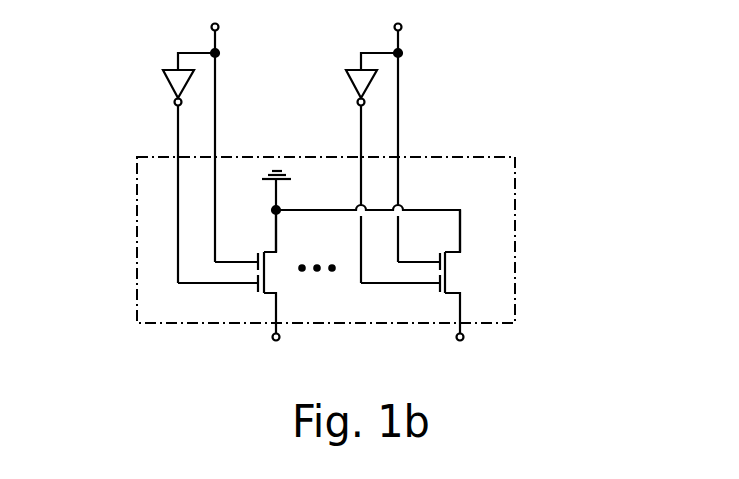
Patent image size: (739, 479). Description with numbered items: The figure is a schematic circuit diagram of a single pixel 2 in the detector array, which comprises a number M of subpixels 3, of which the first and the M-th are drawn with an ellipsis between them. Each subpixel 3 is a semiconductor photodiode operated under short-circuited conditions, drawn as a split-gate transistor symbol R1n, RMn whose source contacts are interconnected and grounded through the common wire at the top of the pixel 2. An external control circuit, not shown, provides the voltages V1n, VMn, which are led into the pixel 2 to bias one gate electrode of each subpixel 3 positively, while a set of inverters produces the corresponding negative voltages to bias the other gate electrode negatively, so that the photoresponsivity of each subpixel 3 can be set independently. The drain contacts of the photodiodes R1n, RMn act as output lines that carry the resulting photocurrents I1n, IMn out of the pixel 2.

The pixel 2 is at (137, 257).
The subpixel 3 is at (371, 296).
The gate voltage V1n is at (194, 147).
The gate voltage VMn is at (375, 147).
The resistive element R1n is at (227, 272).
The resistive element RMn is at (410, 272).
The photocurrent I1n is at (282, 359).
The photocurrent IMn is at (471, 359).